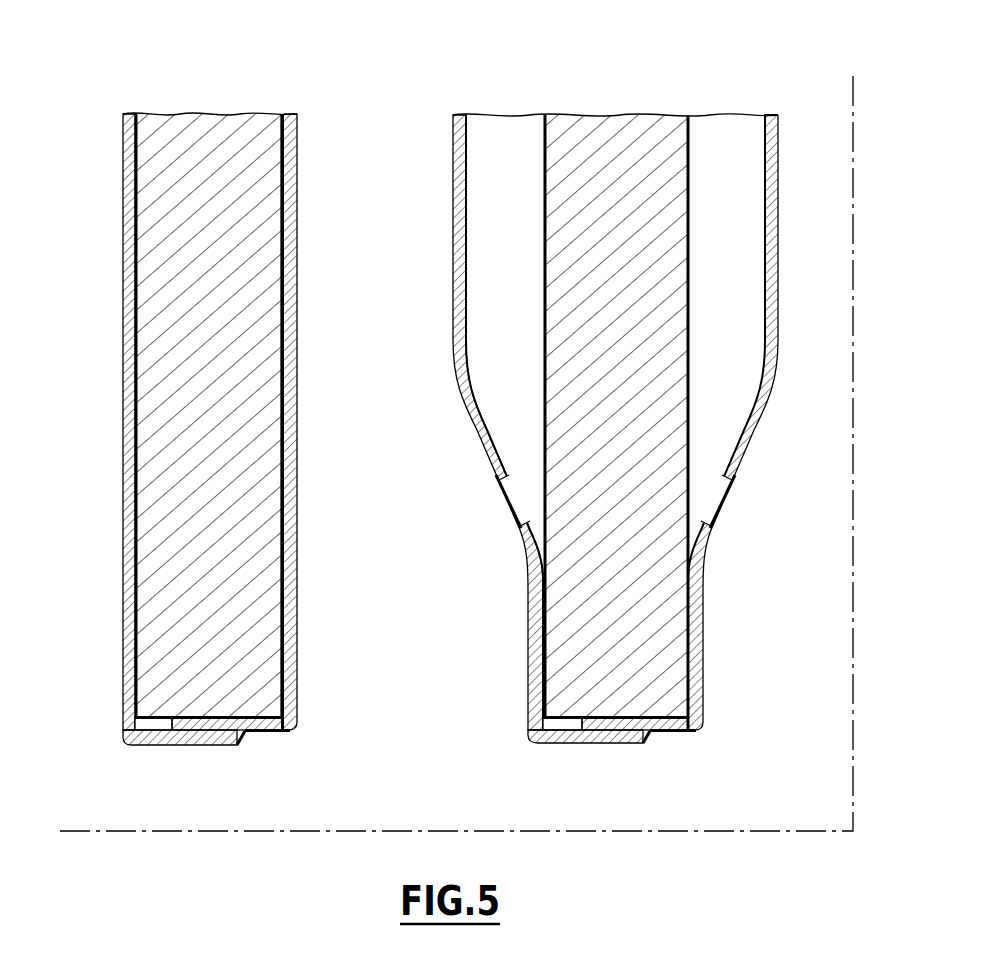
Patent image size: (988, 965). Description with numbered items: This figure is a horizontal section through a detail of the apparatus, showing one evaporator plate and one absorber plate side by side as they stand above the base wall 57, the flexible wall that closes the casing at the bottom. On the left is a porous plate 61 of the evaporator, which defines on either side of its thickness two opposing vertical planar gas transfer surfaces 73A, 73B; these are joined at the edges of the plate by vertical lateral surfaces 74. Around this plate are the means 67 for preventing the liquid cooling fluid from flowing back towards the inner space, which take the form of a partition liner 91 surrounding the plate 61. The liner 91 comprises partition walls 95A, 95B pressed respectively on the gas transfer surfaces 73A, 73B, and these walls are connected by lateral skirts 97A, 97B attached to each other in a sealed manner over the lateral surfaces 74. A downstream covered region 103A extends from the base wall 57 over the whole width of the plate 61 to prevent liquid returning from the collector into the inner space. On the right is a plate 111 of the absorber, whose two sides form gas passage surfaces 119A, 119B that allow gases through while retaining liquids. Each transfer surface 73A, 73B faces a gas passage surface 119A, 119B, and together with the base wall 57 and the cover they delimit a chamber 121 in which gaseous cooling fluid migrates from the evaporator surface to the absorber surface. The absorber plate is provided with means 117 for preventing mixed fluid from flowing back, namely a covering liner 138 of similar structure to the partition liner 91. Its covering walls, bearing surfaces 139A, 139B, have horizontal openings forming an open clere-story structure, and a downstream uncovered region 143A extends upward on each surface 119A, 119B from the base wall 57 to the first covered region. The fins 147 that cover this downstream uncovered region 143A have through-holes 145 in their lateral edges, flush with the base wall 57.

The base wall 57 is at (783, 831).
The porous plate 61 is at (218, 218).
The means for preventing backflow 67 is at (322, 112).
The gas transfer surface 73A is at (285, 283).
The gas transfer surface 73B is at (135, 282).
The lateral surface 74 is at (197, 717).
The partition liner 91 is at (304, 536).
The partition wall 95A is at (290, 362).
The partition wall 95B is at (130, 360).
The lateral skirt 97A is at (258, 745).
The lateral skirt 97B is at (150, 745).
The downstream covered region 103A is at (135, 492).
The plate 111 is at (608, 137).
The means for preventing backflow of mixed fluid 117 is at (779, 72).
The gas passage surface 119A is at (545, 168).
The gas passage surface 119B is at (687, 168).
The chamber 121 is at (527, 449).
The covering liner 138 is at (796, 198).
The covering wall surface 139A is at (528, 640).
The covering wall surface 139B is at (702, 640).
The downstream uncovered region 143A is at (545, 263).
The through-hole 145 is at (505, 487).
The fin 147 is at (453, 311).